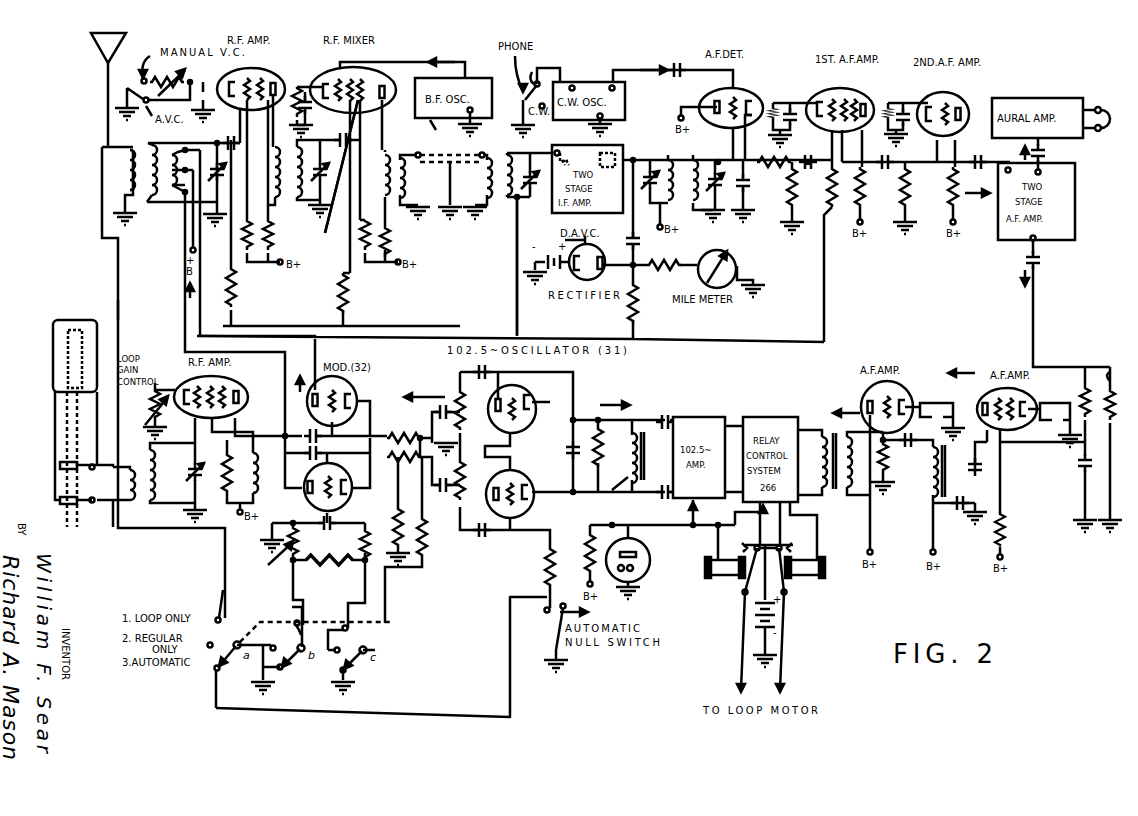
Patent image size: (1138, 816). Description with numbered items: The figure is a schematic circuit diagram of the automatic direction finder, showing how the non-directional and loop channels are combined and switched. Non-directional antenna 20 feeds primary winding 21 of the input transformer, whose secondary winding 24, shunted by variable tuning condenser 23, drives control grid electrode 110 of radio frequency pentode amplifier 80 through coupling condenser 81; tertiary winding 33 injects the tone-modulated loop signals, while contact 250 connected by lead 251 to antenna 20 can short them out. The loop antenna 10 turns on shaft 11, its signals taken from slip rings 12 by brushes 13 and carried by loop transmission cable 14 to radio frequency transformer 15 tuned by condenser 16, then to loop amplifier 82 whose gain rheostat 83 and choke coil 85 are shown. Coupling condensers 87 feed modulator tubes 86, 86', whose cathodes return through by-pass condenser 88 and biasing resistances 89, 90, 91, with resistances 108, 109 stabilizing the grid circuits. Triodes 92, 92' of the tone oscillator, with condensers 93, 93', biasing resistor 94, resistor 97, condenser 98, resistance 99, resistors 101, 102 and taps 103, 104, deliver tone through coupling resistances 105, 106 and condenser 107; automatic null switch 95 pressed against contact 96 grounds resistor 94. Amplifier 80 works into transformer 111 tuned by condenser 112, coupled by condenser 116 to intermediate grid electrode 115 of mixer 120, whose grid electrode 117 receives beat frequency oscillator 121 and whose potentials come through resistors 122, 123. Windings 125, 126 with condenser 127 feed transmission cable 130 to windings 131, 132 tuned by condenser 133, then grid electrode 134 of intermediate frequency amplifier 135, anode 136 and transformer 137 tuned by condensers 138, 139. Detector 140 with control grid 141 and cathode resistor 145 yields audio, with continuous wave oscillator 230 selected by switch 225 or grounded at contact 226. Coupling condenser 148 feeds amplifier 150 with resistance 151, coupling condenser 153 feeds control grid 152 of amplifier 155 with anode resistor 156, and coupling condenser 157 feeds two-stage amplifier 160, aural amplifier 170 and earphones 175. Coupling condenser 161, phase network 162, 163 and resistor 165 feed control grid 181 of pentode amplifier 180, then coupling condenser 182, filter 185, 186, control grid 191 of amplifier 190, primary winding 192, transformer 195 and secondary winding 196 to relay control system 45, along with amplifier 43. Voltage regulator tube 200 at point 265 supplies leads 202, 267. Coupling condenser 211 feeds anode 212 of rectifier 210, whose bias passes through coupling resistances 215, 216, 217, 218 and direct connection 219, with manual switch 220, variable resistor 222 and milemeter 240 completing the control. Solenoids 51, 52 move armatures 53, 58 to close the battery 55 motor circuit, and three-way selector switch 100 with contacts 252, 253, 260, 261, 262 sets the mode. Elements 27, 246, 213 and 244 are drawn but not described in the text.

The non-directional antenna 20 is at (95, 40).
The variable resistor 222 is at (180, 77).
The manual switch 220 is at (130, 86).
The control grid electrode 110 is at (251, 80).
The radio frequency pentode amplifier 80 is at (293, 82).
The coupling condenser 81 is at (228, 131).
The antenna coupling coil 27 is at (123, 158).
The primary winding 21 is at (120, 169).
The secondary winding 24 is at (153, 162).
The tertiary winding 33 is at (182, 171).
The variable tuning condenser 23 is at (221, 175).
The coupling resistance 215 is at (242, 287).
The lead 251 is at (118, 271).
The output radio frequency transformer 111 is at (278, 196).
The coupling condenser 116 is at (338, 139).
The intermediate grid electrode 115 is at (285, 181).
The variable condenser 112 is at (330, 176).
The grid electrode 117 is at (333, 74).
The radio frequency mixer stage 120 is at (382, 82).
The adjustable condenser 127 is at (335, 174).
The coupling resistance 216 is at (354, 293).
The resistor 123 is at (359, 250).
The resistor 122 is at (396, 240).
The primary winding 125 is at (392, 162).
The secondary winding 126 is at (415, 164).
The transmission cable 130 is at (450, 149).
The primary winding 131 is at (490, 167).
The adjustable condenser 133 is at (521, 166).
The secondary winding 132 is at (532, 193).
The beat frequency oscillator 121 is at (438, 127).
The ground contact 226 is at (521, 96).
The switch 225 is at (544, 74).
The continuous wave beat frequency oscillator 230 is at (622, 92).
The grid electrode 134 is at (572, 153).
The two-stage intermediate frequency amplifier 135 is at (605, 153).
The direct connection 219 is at (517, 249).
The anode 136 is at (654, 165).
The transformer 137 is at (690, 165).
The adjustable condenser 138 is at (658, 193).
The adjustable condenser 139 is at (728, 188).
The audio frequency detector stage 140 is at (738, 98).
The control grid 141 is at (726, 99).
The bias network 246 is at (777, 153).
The cathode resistor 145 is at (774, 170).
The coupling condenser 148 is at (822, 150).
The audio frequency pentode amplifier stage 150 is at (855, 98).
The coupling resistance 218 is at (832, 194).
The resistance 151 is at (871, 187).
The coupling condenser 153 is at (895, 152).
The second audio frequency amplifier stage 155 is at (945, 88).
The control grid 152 is at (955, 107).
The anode resistor 156 is at (939, 187).
The coupling condenser 157 is at (985, 152).
The two-stage audio frequency amplifier 160 is at (1072, 178).
The aural amplifier 170 is at (1035, 98).
The earphones 175 is at (1098, 102).
The coupling condenser 161 is at (1040, 260).
The resistor 165 is at (1102, 383).
The resistor 162 is at (1069, 399).
The condenser 163 is at (1068, 463).
The coupling condenser 211 is at (643, 243).
The rectifier 210 is at (612, 244).
The rectifier tube 213 is at (576, 265).
The anode 212 is at (602, 275).
The resistor 244 is at (664, 273).
The direct current milemeter 240 is at (734, 263).
The coupling resistance 217 is at (640, 313).
The loop antenna 10 is at (76, 320).
The shaft 11 is at (60, 514).
The slip rings 12 is at (75, 487).
The brushes 13 is at (95, 480).
The loop transmission cable 14 is at (111, 483).
The radio frequency transformer 15 is at (146, 451).
The tuning condenser 16 is at (186, 474).
The rheostat 83 is at (146, 407).
The radio frequency amplifier pentode 82 is at (238, 392).
The radio frequency choke coil 85 is at (238, 445).
The modulator tube 86 is at (323, 400).
The modulator tube 86' is at (313, 487).
The coupling condenser 87 is at (309, 434).
The by-pass condenser 88 is at (328, 530).
The biasing resistor 91 is at (280, 552).
The biasing resistance 90 is at (328, 566).
The biasing resistance 89 is at (373, 540).
The resistance 108 is at (389, 525).
The grid resistor 109 is at (424, 538).
The coupling resistance 105 is at (403, 429).
The coupling resistance 106 is at (403, 464).
The coupling condenser 107 is at (436, 411).
The resistor 101 is at (456, 395).
The intermediate tap 104 is at (462, 475).
The resistor 102 is at (456, 502).
The intermediate tap 103 is at (448, 426).
The condenser 93 is at (482, 379).
The condenser 93' is at (483, 536).
The triode 92 is at (512, 415).
The triode 92' is at (511, 488).
The biasing resistor 94 is at (546, 560).
The contact 96 is at (546, 610).
The automatic null switch 95 is at (555, 633).
The resistor 97 is at (589, 548).
The condenser 98 is at (582, 448).
The resistance 99 is at (606, 445).
The lead 202 is at (595, 504).
The point 265 is at (615, 522).
The lead 267 is at (673, 512).
The 102.5 cycle amplifier 43 is at (694, 417).
The relay control system 45 is at (766, 417).
The voltage regulator tube 200 is at (640, 554).
The solenoid 51 is at (725, 576).
The solenoid 52 is at (805, 576).
The armature 53 is at (767, 569).
The armature 58 is at (771, 567).
The battery 55 is at (780, 616).
The audio frequency coupling transformer 195 is at (835, 428).
The secondary winding 196 is at (822, 463).
The amplifier stage 190 is at (864, 394).
The control grid 191 is at (906, 396).
The primary winding 192 is at (870, 458).
The coupling condenser 182 is at (893, 446).
The choke coil 185 is at (923, 476).
The condenser 186 is at (975, 484).
The pentode amplifier stage 180 is at (985, 392).
The control grid 181 is at (1013, 422).
The contact 250 is at (222, 614).
The intermediate contact 252 is at (234, 648).
The contact 253 is at (209, 687).
The contact 260 is at (316, 624).
The intermediate contact 262 is at (284, 651).
The contact 261 is at (346, 638).
The three-way selector switch 100 is at (308, 675).